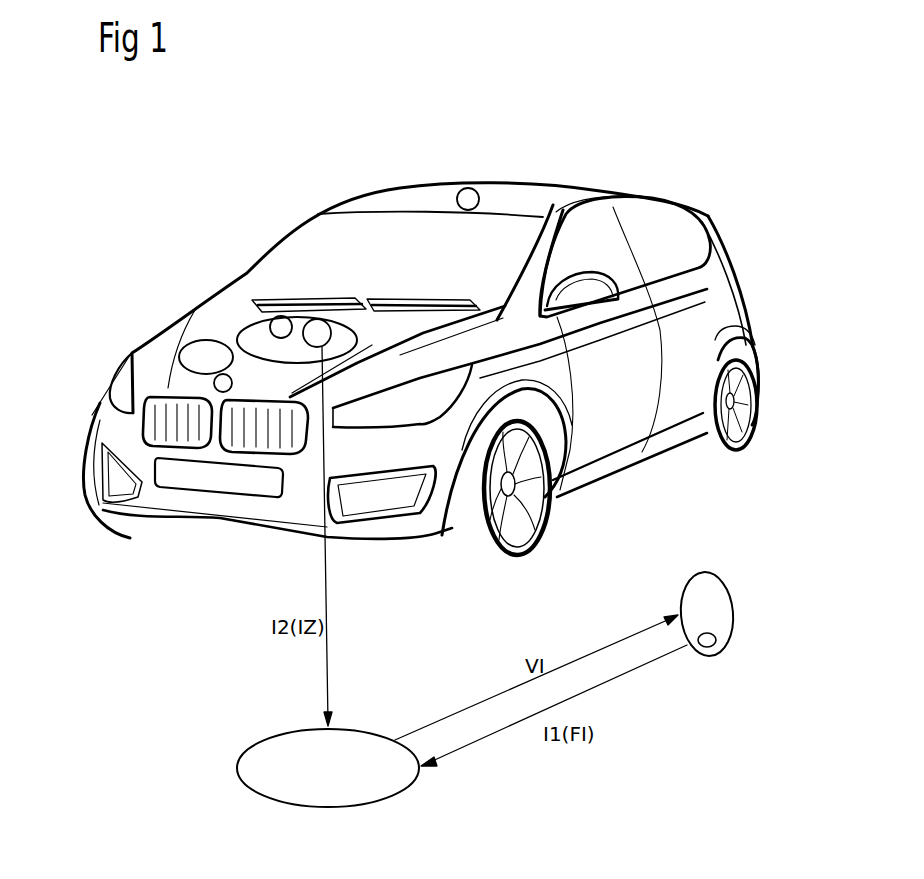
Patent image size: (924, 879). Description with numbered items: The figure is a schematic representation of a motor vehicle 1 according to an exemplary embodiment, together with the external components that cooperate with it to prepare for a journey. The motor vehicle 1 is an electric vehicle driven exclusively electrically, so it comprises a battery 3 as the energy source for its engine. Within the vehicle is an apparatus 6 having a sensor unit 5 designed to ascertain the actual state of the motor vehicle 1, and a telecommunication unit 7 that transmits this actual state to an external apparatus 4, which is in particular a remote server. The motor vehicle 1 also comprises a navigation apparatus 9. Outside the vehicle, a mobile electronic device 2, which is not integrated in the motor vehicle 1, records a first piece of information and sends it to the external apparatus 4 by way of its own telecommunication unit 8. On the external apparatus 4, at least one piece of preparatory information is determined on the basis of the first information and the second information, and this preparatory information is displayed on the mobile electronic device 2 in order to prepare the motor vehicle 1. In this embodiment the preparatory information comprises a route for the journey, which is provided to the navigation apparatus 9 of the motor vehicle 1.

The motor vehicle 1 is at (644, 184).
The mobile electronic device 2 is at (682, 590).
The battery 3 is at (180, 347).
The external apparatus 4 is at (237, 778).
The sensor unit 5 is at (255, 333).
The apparatus 6 is at (335, 320).
The telecommunication unit 7 is at (272, 316).
The telecommunication unit 8 is at (718, 647).
The navigation apparatus 9 is at (468, 197).